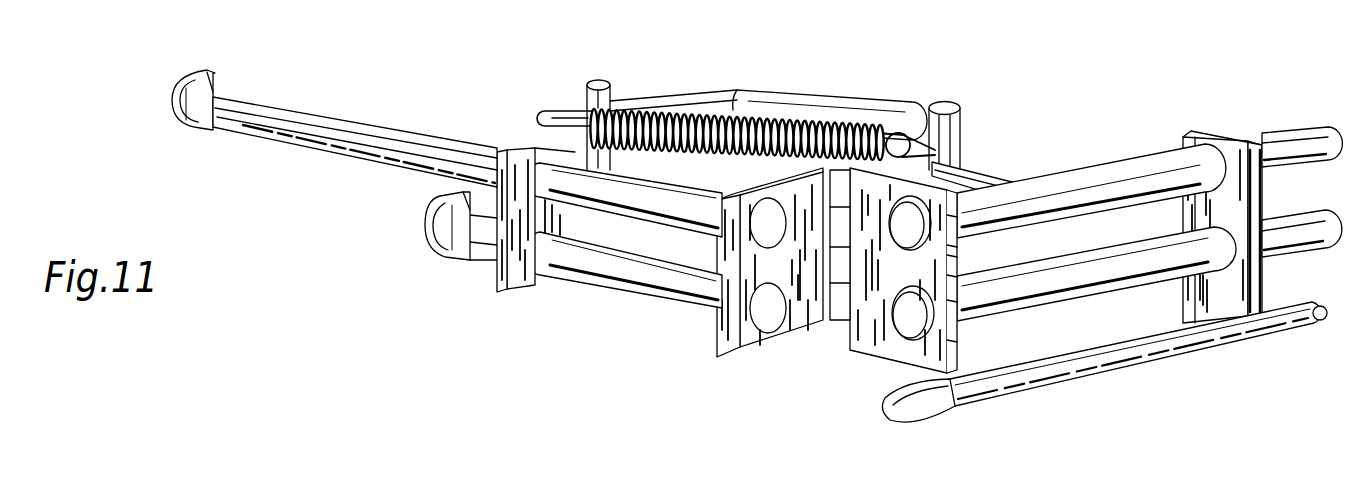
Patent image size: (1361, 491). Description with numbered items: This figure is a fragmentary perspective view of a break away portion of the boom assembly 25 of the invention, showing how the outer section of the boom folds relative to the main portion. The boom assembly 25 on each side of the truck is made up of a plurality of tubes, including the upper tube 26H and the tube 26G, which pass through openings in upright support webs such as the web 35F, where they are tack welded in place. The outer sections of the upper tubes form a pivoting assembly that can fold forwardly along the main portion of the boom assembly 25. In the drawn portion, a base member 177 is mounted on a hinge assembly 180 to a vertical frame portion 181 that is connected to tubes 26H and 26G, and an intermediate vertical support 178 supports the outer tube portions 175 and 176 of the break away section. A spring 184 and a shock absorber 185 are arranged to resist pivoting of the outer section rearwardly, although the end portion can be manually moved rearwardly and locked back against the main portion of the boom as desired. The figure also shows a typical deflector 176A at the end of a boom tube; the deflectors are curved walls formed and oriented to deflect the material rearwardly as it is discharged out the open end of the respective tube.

The boom assembly 25 is at (1299, 118).
The tube 26G is at (1053, 277).
The upper tube 26H is at (1138, 173).
The upright support web 35F is at (1237, 290).
The channel bar 175 is at (253, 113).
The rod / clip 176 is at (580, 253).
The deflector 176A is at (426, 222).
The base member 177 is at (752, 340).
The intermediate vertical support 178 is at (522, 148).
The hinge assembly 180 is at (843, 317).
The vertical frame portion 181 is at (958, 265).
The spring 184 is at (658, 120).
The shock absorber 185 is at (797, 110).